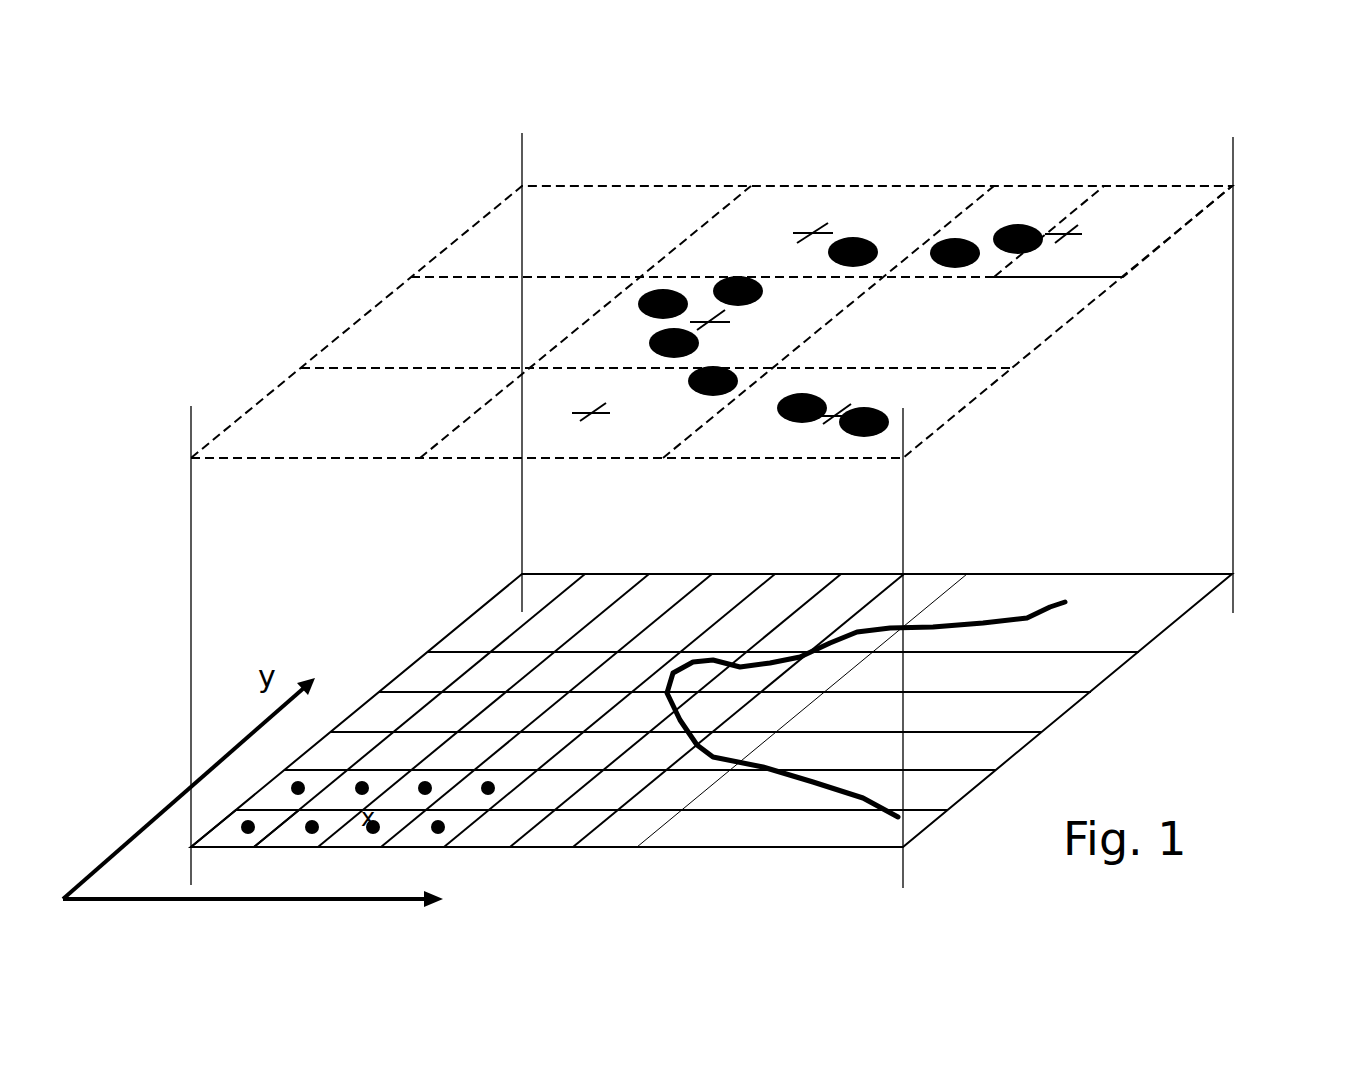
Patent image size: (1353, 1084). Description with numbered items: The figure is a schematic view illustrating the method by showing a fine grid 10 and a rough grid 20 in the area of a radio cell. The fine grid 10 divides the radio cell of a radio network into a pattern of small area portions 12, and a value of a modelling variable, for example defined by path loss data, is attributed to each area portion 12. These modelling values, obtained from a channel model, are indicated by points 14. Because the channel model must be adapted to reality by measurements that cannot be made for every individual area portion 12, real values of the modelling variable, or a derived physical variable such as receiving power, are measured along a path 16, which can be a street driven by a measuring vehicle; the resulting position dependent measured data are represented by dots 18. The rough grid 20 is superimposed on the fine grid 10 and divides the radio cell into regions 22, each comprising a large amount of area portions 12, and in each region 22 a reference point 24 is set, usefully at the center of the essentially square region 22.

The fine grid 10 is at (1113, 680).
The area portion 12 is at (217, 834).
The point 14 is at (248, 820).
The path 16 is at (797, 782).
The dot 18 is at (850, 240).
The rough grid 20 is at (1163, 250).
The region 22 is at (1162, 212).
The reference point 24 is at (1061, 233).